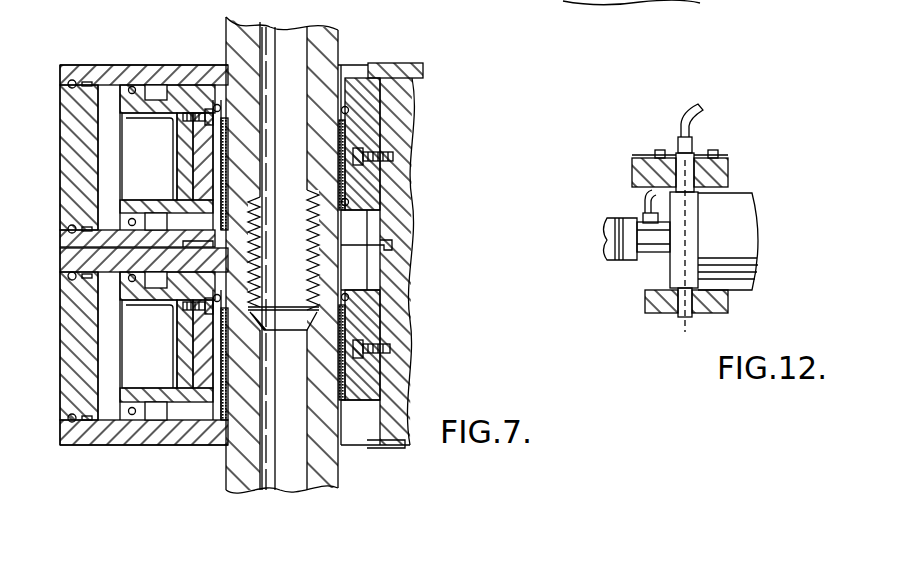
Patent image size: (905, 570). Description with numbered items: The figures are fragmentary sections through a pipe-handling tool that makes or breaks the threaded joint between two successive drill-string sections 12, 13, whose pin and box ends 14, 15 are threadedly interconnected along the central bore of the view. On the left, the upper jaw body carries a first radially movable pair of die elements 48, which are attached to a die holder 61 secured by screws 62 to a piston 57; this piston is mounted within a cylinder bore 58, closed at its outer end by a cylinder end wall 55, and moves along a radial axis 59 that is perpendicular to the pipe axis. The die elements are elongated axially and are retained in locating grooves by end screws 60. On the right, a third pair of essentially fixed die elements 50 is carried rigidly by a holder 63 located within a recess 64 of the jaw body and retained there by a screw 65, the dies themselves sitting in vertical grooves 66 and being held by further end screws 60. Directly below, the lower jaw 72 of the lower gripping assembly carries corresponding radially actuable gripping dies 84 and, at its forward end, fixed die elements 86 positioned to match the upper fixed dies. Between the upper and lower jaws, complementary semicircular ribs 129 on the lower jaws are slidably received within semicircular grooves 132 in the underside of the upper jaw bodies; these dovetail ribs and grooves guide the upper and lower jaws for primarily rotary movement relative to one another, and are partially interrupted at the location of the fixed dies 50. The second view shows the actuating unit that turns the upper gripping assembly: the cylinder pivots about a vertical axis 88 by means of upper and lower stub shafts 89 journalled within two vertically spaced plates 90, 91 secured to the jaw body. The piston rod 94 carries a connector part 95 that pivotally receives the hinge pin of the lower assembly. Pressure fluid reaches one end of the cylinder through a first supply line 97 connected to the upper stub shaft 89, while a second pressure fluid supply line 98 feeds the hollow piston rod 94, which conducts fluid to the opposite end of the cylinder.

In FIG. 7, the pipe section 12 is at (340, 33).
In FIG. 7, the pipe section 13 is at (326, 478).
In FIG. 7, the pin end 14 is at (258, 272).
In FIG. 7, the box end 15 is at (263, 308).
In FIG. 7, the die elements 48 is at (205, 150).
In FIG. 7, the die elements 50 is at (334, 183).
In FIG. 7, the cylinder end wall 55 is at (72, 128).
In FIG. 7, the piston 57 is at (153, 98).
In FIG. 7, the cylinder bore 58 is at (96, 86).
In FIG. 7, the axis 59 is at (70, 157).
In FIG. 7, the end screws 60 is at (222, 108).
In FIG. 7, the die holder 61 is at (207, 148).
In FIG. 7, the screws 62 is at (187, 112).
In FIG. 7, the holder 63 is at (400, 120).
In FIG. 7, the recess 64 is at (388, 85).
In FIG. 7, the screw 65 is at (393, 156).
In FIG. 7, the vertical grooves 66 is at (348, 133).
In FIG. 7, the lower jaw 72 is at (182, 440).
In FIG. 7, the gripping dies 84 is at (220, 362).
In FIG. 7, the fixed die elements 86 is at (336, 338).
In FIG. 12, the vertical axis 88 is at (687, 233).
In FIG. 12, the stub shafts 89 is at (688, 170).
In FIG. 12, the plate 90 is at (633, 153).
In FIG. 12, the plate 91 is at (670, 312).
In FIG. 12, the piston rod 94 is at (657, 250).
In FIG. 12, the connector part 95 is at (610, 240).
In FIG. 12, the first supply line 97 is at (707, 110).
In FIG. 12, the second pressure fluid supply line 98 is at (647, 207).
In FIG. 7, the semicircular ribs 129 is at (388, 245).
In FIG. 7, the semicircular grooves 132 is at (388, 243).